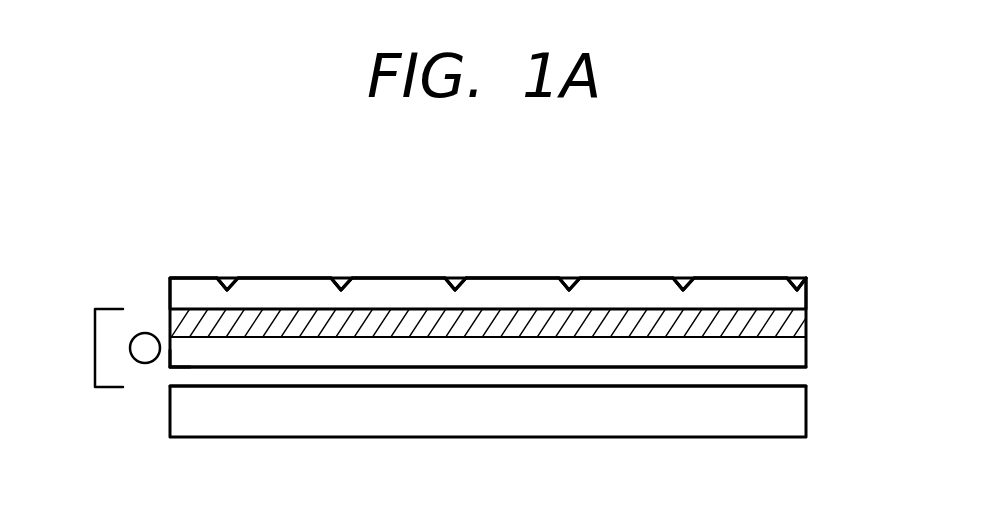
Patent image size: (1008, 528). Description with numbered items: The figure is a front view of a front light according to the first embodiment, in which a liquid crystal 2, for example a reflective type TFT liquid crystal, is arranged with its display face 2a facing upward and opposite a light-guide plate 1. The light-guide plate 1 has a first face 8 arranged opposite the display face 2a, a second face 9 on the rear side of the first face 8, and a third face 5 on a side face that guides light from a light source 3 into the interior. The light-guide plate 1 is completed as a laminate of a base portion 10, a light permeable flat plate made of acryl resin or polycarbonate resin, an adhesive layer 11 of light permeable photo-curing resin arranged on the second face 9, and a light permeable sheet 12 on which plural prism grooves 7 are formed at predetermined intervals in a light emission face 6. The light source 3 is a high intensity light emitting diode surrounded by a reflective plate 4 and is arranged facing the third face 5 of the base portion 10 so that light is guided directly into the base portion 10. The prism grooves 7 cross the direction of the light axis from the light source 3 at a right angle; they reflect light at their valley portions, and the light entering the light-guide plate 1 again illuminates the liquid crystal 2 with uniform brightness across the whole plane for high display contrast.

The light-guide plate 1 is at (732, 258).
The liquid crystal 2 is at (797, 423).
The display face 2a is at (526, 387).
The light source 3 is at (147, 333).
The reflective plate 4 is at (95, 347).
The third face 5 is at (168, 357).
The light emission face 6 is at (394, 278).
The prism grooves 7 is at (229, 281).
The first face 8 is at (757, 368).
The second face 9 is at (773, 325).
The base portion 10 is at (797, 355).
The adhesive layer 11 is at (798, 322).
The sheet 12 is at (797, 293).